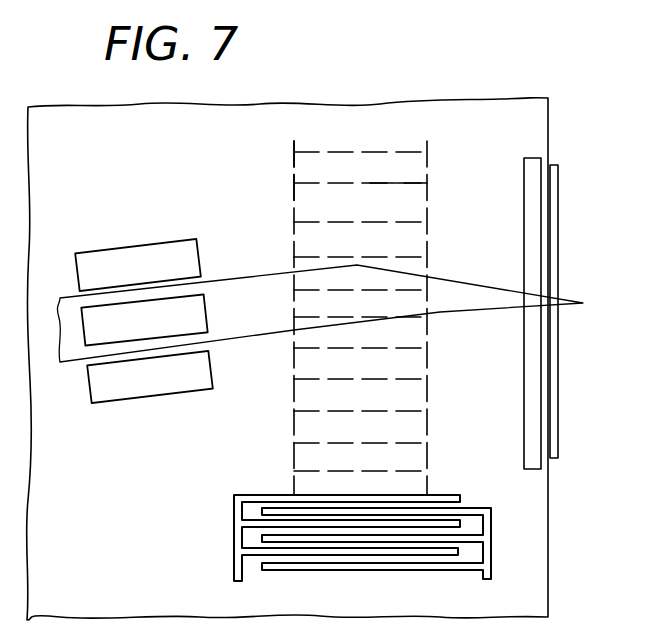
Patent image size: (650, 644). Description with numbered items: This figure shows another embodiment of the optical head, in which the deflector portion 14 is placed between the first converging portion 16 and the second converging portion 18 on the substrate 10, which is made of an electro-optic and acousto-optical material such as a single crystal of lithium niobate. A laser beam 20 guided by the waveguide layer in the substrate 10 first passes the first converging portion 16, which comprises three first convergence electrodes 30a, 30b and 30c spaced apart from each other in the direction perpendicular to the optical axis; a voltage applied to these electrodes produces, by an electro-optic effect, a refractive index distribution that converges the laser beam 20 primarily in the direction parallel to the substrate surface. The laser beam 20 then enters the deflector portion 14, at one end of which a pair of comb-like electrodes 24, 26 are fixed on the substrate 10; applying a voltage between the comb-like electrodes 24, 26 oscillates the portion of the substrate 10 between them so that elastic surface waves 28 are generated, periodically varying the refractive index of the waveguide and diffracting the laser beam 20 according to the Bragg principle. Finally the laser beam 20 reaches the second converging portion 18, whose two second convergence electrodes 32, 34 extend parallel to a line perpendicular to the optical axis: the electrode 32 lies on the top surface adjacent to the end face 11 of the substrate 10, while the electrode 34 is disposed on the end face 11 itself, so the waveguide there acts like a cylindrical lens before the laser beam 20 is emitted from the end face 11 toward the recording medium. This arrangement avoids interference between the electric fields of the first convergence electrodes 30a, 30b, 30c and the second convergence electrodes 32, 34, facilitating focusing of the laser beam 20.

The substrate 10 is at (360, 115).
The end face 11 is at (551, 575).
The deflector portion 14 is at (280, 181).
The first converging portion 16 is at (173, 340).
The second converging portion 18 is at (559, 355).
The laser beam 20 is at (67, 345).
The comb-like electrode 24 is at (234, 565).
The comb-like electrode 26 is at (463, 568).
The elastic surface waves 28 is at (387, 183).
The first convergence electrode 30a is at (202, 317).
The first convergence electrode 30b is at (120, 257).
The first convergence electrode 30c is at (187, 385).
The second convergence electrode 32 is at (537, 409).
The second convergence electrode 34 is at (557, 445).